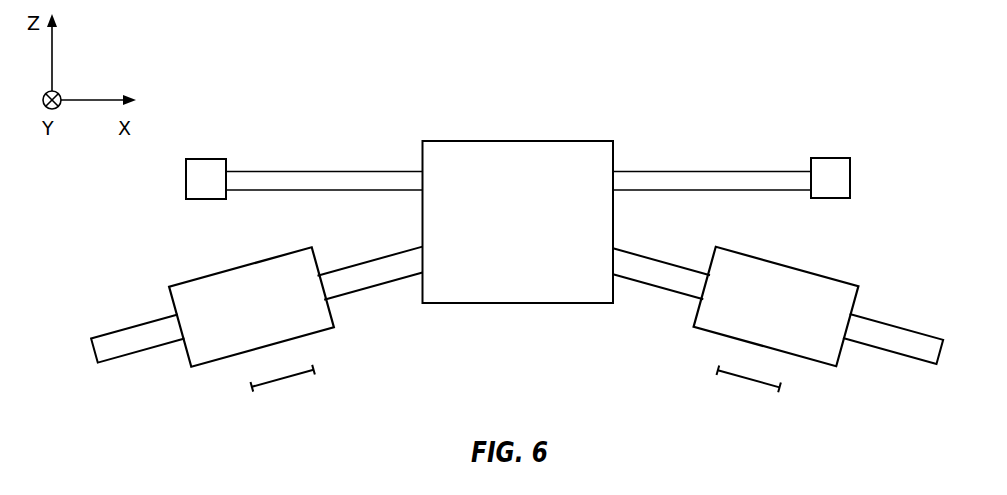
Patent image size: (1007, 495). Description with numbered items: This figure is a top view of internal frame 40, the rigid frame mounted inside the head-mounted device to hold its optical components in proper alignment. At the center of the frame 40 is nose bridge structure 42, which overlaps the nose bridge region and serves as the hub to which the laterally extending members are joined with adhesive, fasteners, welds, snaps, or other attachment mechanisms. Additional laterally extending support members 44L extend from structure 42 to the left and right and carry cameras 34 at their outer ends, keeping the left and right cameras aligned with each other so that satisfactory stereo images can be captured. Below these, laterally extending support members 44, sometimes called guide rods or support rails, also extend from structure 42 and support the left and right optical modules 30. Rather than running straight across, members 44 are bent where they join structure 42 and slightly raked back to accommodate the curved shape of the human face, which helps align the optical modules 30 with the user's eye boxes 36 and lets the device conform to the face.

The internal frame 40 is at (621, 104).
The nose bridge structure 42 is at (521, 293).
The laterally extending support members 44 is at (364, 271).
The laterally extending support members 44L is at (323, 181).
The cameras 34 is at (205, 166).
The optical modules 30 is at (215, 273).
The eye boxes 36 is at (250, 388).